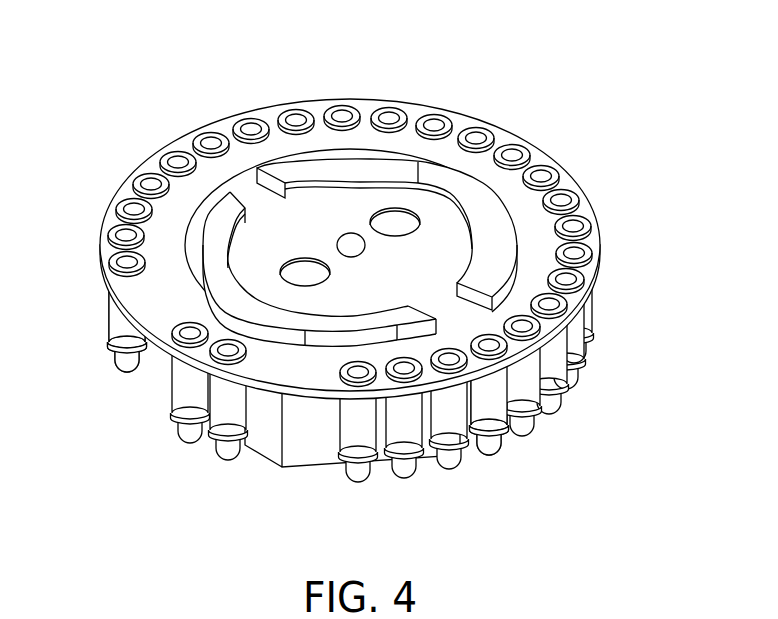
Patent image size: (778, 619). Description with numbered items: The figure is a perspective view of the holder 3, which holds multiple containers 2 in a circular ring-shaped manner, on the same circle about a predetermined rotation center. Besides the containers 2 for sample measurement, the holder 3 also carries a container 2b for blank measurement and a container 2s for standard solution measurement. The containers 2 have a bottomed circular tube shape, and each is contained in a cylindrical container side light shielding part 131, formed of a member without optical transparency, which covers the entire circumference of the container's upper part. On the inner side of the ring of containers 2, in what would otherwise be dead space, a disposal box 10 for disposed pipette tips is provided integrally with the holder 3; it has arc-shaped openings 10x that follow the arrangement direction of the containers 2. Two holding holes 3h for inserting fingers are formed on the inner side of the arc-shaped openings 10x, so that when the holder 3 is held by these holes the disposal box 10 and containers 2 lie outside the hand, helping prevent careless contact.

The container 2 is at (350, 298).
The container for standard solution measurement 2s is at (187, 432).
The container for blank measurement 2b is at (230, 449).
The holder 3 is at (313, 103).
The holding hole 3h is at (320, 268).
The disposal box 10 is at (372, 285).
The arc-shaped opening 10x is at (393, 158).
The container side light shielding part 131 is at (108, 324).